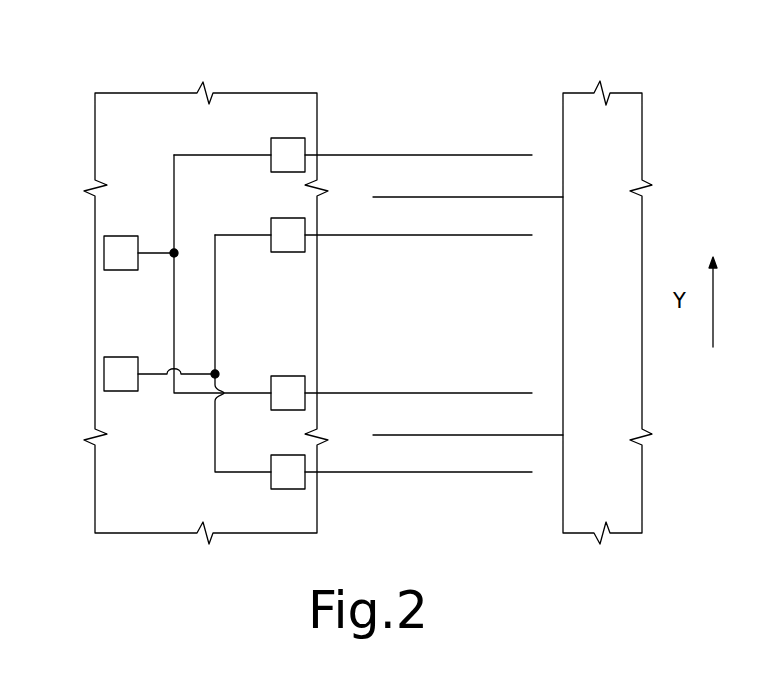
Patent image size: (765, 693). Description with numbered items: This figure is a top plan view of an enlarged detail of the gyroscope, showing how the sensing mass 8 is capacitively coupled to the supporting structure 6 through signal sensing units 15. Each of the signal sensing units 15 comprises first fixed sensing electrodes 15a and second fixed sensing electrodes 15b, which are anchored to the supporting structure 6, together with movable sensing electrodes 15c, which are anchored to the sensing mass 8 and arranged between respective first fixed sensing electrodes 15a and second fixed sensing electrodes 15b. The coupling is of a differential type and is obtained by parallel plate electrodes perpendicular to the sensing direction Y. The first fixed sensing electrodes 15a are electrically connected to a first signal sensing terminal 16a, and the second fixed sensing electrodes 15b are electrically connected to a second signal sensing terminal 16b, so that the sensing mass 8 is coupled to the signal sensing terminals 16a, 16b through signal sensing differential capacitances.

The supporting structure 6 is at (160, 534).
The sensing mass 8 is at (638, 132).
The signal sensing units 15 is at (368, 293).
The first fixed sensing electrodes 15a is at (388, 154).
The second fixed sensing electrodes 15b is at (368, 237).
The movable sensing electrodes 15c is at (535, 199).
The first signal sensing terminal 16a is at (103, 259).
The second signal sensing terminal 16b is at (102, 372).